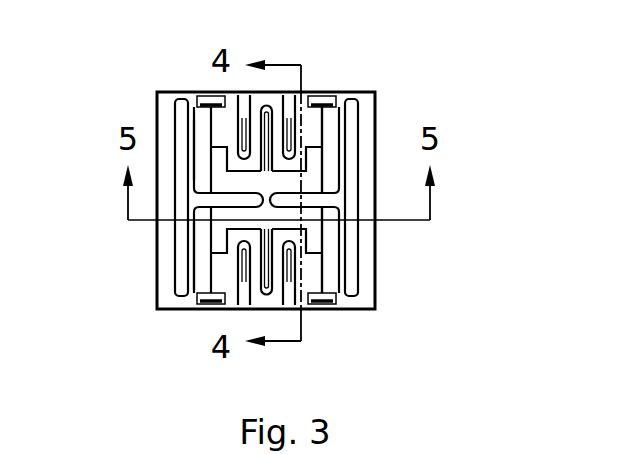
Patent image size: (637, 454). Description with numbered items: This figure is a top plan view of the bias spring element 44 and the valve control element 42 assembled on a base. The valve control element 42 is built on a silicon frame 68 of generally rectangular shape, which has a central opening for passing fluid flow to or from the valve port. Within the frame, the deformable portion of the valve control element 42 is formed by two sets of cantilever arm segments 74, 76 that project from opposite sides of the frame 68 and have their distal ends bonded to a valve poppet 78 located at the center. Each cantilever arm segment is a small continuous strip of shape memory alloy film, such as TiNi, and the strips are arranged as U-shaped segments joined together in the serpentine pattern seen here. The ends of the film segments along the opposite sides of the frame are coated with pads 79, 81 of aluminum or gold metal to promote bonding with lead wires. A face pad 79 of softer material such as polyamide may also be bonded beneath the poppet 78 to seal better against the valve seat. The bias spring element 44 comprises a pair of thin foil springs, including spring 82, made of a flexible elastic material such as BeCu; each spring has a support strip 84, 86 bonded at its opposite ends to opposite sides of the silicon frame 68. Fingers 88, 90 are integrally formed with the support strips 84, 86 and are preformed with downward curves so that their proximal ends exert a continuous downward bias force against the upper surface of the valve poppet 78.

The valve control element 42 is at (157, 97).
The bias spring element 44 is at (206, 122).
The silicon frame 68 is at (373, 100).
The cantilever arm segments 74 is at (313, 116).
The cantilever arm segments 76 is at (221, 269).
The valve poppet 78 is at (326, 162).
The face pad 79 is at (208, 305).
The pad 81 is at (333, 308).
The thin foil spring 82 is at (358, 283).
The support strip 84 is at (183, 140).
The support strip 86 is at (181, 268).
The finger 88 is at (216, 212).
The finger 90 is at (318, 220).